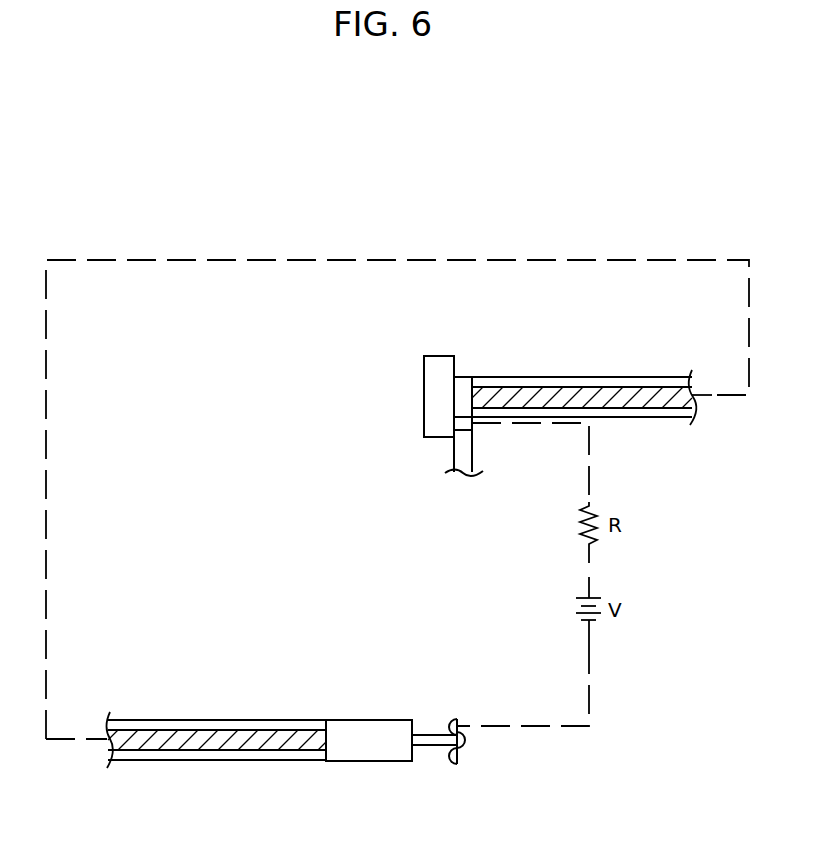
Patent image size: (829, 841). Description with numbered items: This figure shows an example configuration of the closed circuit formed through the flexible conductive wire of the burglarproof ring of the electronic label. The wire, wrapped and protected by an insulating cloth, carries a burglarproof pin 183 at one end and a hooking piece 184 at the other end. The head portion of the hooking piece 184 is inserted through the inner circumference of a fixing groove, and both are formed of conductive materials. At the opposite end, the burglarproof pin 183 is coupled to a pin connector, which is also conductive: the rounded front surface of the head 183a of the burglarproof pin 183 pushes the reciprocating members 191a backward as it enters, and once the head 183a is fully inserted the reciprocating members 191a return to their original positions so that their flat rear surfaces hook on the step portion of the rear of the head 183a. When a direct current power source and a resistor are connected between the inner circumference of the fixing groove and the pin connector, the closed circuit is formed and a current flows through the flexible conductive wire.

The burglarproof pin 183 is at (426, 737).
The head of the burglarproof pin 183a is at (460, 760).
The hooking piece 184 is at (437, 354).
The reciprocating member 191a is at (456, 718).